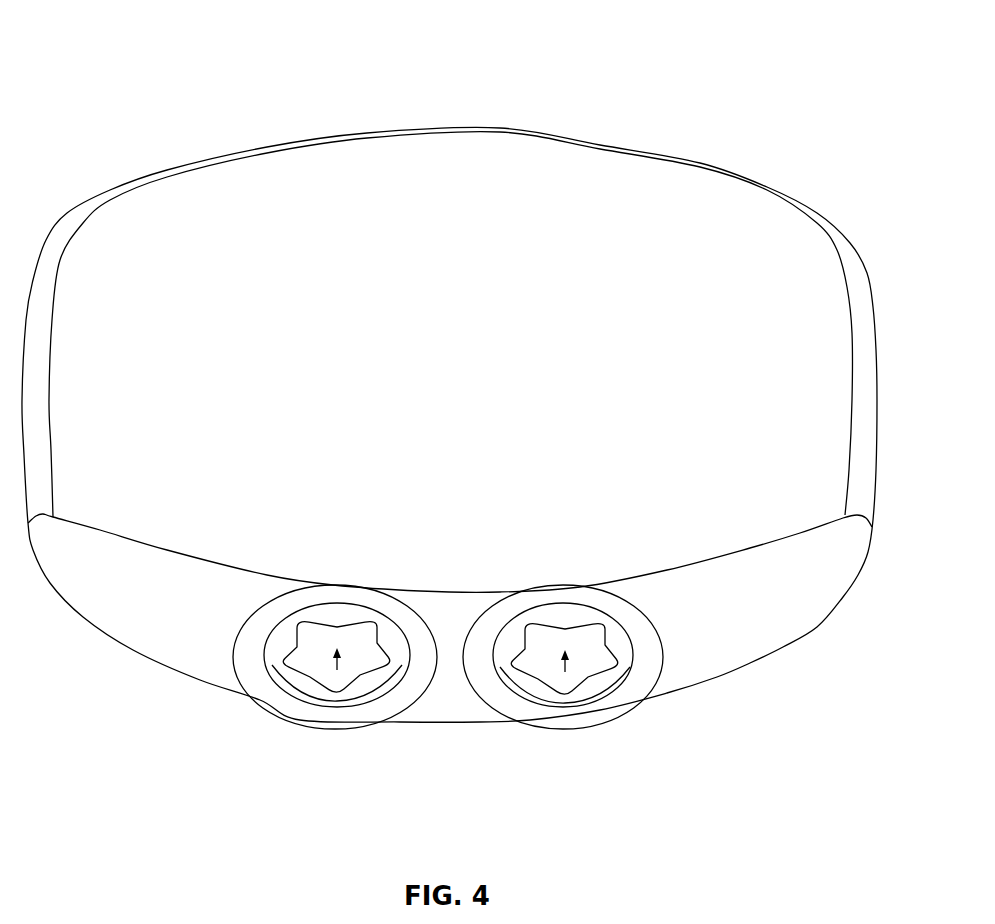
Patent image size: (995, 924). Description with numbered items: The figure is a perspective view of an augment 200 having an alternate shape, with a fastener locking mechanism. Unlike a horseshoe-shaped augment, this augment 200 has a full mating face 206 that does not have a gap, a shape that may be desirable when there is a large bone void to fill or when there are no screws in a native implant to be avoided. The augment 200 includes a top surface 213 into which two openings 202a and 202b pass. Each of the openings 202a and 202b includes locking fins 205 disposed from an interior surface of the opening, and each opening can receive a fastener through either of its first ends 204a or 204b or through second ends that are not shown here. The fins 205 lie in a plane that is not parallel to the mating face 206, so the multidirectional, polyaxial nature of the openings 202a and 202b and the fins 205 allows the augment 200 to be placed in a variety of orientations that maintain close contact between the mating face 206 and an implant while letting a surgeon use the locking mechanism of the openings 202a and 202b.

The augment 200 is at (146, 56).
The opening 202a is at (330, 690).
The opening 202b is at (563, 690).
The first end 204a is at (260, 683).
The first end 204b is at (497, 698).
The locking fins 205 is at (362, 683).
The mating face 206 is at (745, 218).
The top surface 213 is at (793, 612).